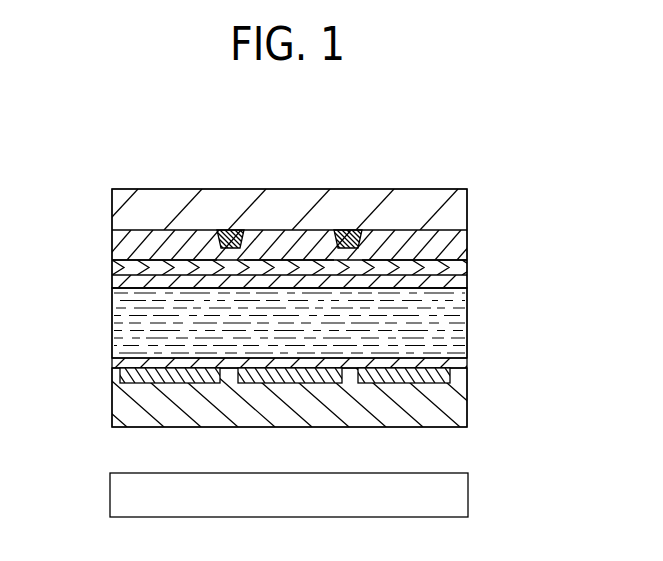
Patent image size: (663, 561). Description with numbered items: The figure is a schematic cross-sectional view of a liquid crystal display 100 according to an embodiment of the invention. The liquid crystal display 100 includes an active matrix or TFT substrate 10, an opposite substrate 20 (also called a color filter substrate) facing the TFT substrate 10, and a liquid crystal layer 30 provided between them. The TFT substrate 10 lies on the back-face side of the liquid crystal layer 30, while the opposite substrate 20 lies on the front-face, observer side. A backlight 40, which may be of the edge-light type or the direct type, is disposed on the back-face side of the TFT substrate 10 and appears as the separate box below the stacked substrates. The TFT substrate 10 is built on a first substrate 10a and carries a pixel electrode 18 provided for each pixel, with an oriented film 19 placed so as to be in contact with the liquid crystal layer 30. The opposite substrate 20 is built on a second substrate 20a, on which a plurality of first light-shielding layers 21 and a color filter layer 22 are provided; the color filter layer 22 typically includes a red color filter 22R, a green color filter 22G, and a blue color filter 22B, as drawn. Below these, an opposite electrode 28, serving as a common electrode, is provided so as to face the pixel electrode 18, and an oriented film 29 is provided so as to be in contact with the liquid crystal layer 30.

The liquid crystal display 100 is at (520, 153).
The opposite substrate 20 is at (100, 188).
The liquid crystal layer 30 is at (100, 290).
The active matrix substrate 10 is at (100, 360).
The second substrate 20a is at (466, 212).
The color filter layer 22 is at (476, 232).
The red color filter 22R is at (157, 244).
The green color filter 22G is at (280, 246).
The blue color filter 22B is at (410, 240).
The first light-shielding layer 21 is at (228, 230).
The opposite electrode 28 is at (462, 265).
The oriented film 29 is at (462, 282).
The oriented film 19 is at (455, 362).
The pixel electrode 18 is at (455, 378).
The first substrate 10a is at (452, 412).
The backlight 40 is at (136, 492).